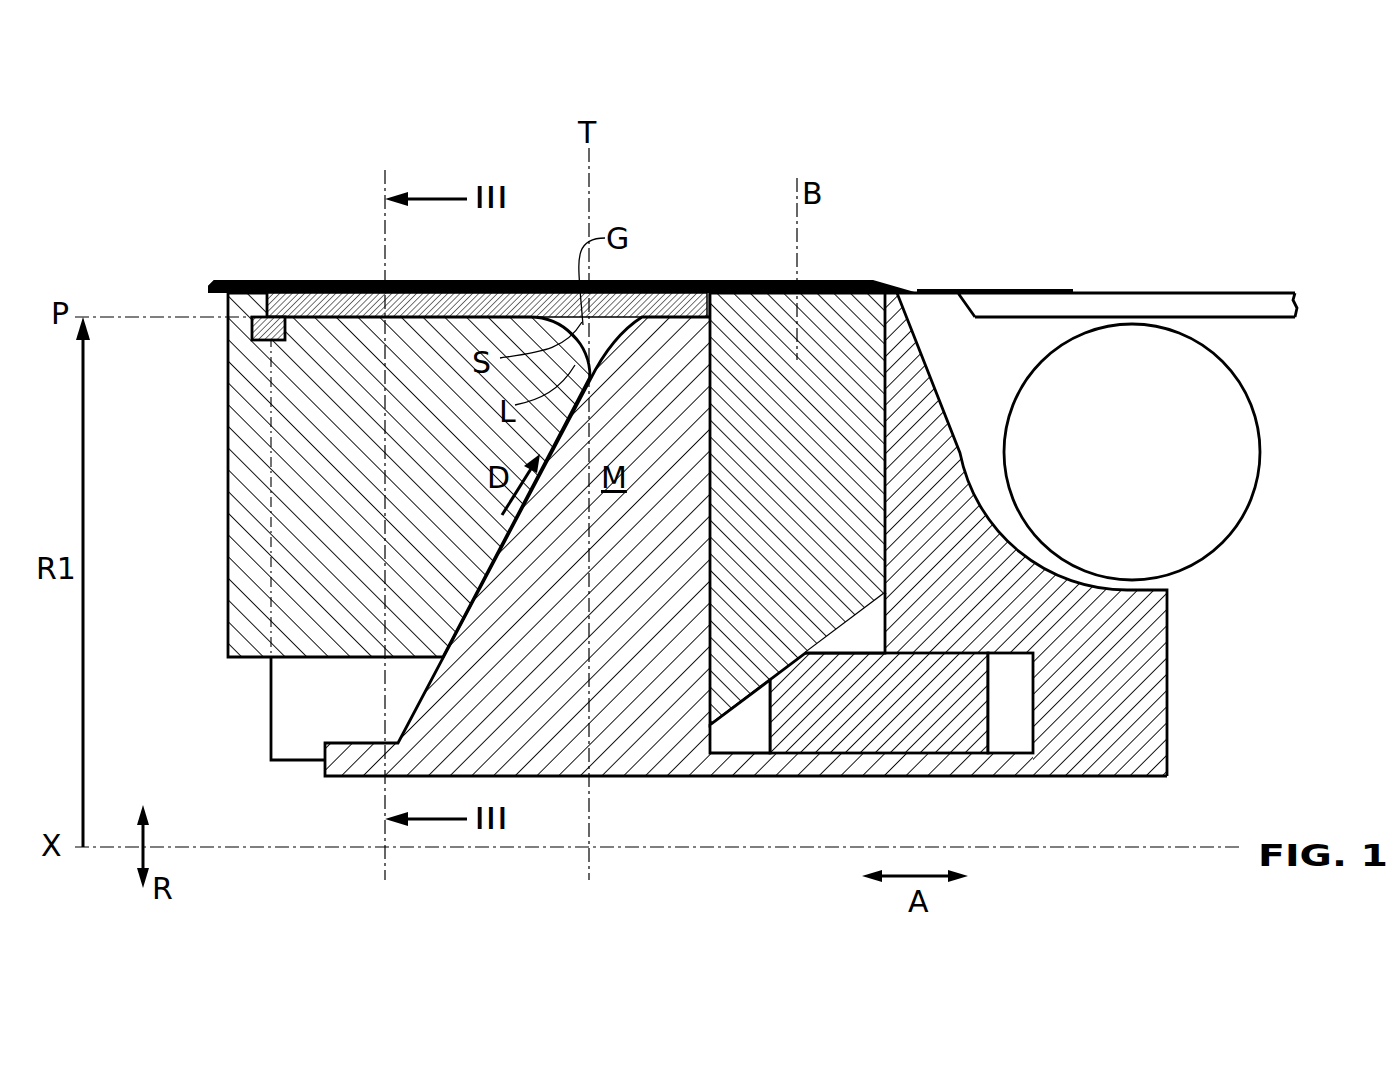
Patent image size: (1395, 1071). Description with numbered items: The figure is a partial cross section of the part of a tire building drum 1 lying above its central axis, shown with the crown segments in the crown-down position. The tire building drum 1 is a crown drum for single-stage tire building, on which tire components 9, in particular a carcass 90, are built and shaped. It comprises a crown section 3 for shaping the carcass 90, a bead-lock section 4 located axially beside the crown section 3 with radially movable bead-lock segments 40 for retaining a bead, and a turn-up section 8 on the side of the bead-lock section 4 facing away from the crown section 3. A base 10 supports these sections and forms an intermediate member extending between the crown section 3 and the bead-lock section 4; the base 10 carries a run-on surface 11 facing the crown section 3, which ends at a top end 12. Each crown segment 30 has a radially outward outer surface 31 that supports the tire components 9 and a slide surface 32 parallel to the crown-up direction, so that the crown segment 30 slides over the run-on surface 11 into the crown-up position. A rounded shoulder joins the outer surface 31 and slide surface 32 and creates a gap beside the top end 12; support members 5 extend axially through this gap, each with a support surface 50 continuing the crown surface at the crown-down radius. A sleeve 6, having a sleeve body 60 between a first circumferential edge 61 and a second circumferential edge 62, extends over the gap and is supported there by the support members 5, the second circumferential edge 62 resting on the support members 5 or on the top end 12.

The tire building drum 1 is at (1236, 156).
The crown section 3 is at (666, 141).
The bead-lock section 4 is at (818, 155).
The support member 5 is at (285, 737).
The sleeve 6 is at (480, 280).
The turn-up section 8 is at (986, 210).
The tire component 9 is at (250, 280).
The base 10 is at (628, 735).
The run-on surface 11 is at (415, 708).
The top end 12 is at (640, 325).
The crown segment 30 is at (245, 497).
The outer surface 31 is at (340, 318).
The slide surface 32 is at (470, 565).
The bead-lock segment 40 is at (757, 657).
The support surface 50 is at (710, 290).
The sleeve body 60 is at (533, 280).
The first circumferential edge 61 is at (252, 327).
The second circumferential edge 62 is at (707, 325).
The carcass 90 is at (328, 280).